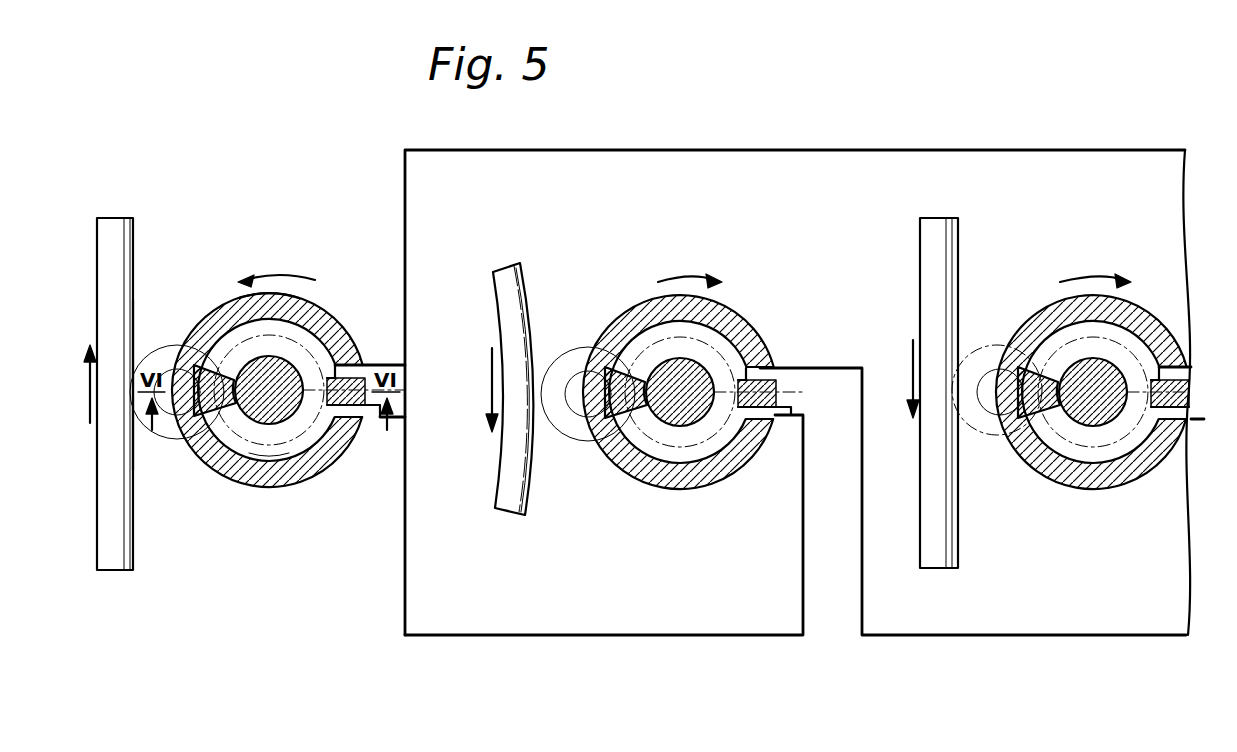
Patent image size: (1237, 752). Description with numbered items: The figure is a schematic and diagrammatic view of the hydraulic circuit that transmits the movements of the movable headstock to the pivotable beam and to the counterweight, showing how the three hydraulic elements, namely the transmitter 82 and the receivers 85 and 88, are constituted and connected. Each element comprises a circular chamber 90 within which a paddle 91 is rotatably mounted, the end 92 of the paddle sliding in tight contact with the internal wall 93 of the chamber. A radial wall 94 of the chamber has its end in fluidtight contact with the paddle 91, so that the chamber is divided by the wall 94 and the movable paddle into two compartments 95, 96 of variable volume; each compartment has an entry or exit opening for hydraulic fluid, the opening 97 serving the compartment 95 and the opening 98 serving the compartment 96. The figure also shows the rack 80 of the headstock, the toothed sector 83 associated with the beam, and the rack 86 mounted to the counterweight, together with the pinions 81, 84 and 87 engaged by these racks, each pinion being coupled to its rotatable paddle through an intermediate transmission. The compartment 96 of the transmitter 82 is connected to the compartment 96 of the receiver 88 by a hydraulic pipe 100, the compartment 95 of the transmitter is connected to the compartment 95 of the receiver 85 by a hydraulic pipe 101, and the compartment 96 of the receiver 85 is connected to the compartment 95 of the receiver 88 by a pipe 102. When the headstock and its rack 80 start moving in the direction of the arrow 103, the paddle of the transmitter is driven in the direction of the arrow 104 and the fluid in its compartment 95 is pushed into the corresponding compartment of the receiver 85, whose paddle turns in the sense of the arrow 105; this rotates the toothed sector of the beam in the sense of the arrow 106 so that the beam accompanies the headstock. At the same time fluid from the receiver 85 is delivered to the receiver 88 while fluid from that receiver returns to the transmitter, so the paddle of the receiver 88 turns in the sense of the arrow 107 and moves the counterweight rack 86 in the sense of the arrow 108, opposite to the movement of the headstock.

The rack 80 is at (113, 570).
The pinion 81 is at (177, 424).
The transmitter 82 is at (278, 214).
The toothed sector 83 is at (510, 505).
The pinion 84 is at (588, 420).
The receiver 85 is at (693, 341).
The rack 86 is at (936, 568).
The pinion 87 is at (997, 422).
The receiver 88 is at (1100, 332).
The circular chamber 90 is at (267, 413).
The paddle 91 is at (265, 437).
The end of the paddle 92 is at (209, 435).
The internal wall 93 is at (288, 300).
The radial wall 94 is at (354, 440).
The compartment 95 is at (267, 506).
The compartment 96 is at (259, 358).
The opening 97 is at (366, 435).
The opening 98 is at (366, 344).
The hydraulic pipe 100 is at (776, 150).
The hydraulic pipe 101 is at (640, 635).
The pipe 102 is at (1110, 635).
The arrow 103 is at (117, 372).
The arrow 104 is at (278, 262).
The arrow 105 is at (690, 264).
The arrow 106 is at (490, 396).
The arrow 107 is at (1102, 263).
The arrow 108 is at (911, 370).